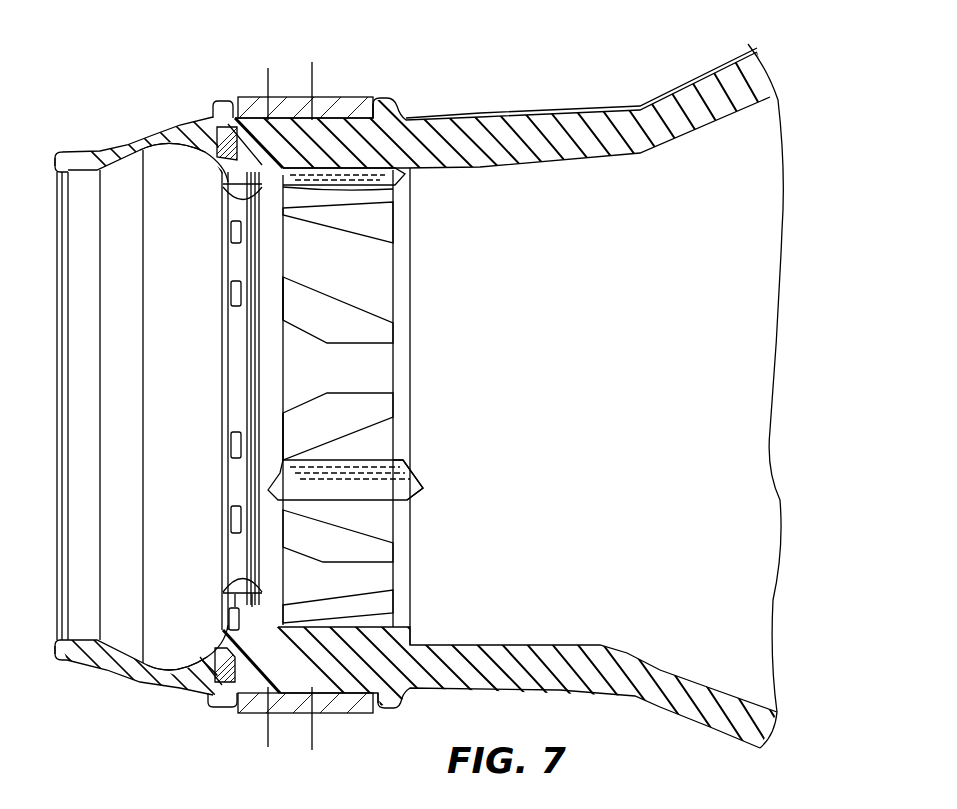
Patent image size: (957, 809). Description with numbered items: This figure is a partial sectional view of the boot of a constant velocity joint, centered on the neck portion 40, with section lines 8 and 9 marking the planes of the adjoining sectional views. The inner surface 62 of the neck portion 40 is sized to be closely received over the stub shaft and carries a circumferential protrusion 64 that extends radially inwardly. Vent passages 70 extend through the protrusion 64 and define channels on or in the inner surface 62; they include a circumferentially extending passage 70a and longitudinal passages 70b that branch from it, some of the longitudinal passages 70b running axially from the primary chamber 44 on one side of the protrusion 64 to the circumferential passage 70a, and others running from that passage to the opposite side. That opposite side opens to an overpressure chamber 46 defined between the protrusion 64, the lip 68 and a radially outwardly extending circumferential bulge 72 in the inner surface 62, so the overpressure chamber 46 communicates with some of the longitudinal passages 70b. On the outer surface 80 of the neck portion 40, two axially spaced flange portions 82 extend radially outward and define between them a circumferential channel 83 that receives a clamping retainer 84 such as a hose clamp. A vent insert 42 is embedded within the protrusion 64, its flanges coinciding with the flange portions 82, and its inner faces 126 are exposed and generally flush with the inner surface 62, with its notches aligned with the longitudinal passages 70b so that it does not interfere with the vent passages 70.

The neck portion 40 is at (453, 119).
The vent insert 42 is at (220, 460).
The primary chamber 44 is at (757, 127).
The overpressure chamber 46 is at (172, 163).
The inner surface 62 is at (524, 168).
The circumferential protrusion 64 is at (401, 355).
The lip 68 is at (54, 160).
The vent passages 70 is at (243, 195).
The circumferentially extending passage 70a is at (268, 392).
The longitudinal passages 70b is at (240, 192).
The circumferential bulge 72 is at (197, 153).
The outer surface 80 is at (533, 117).
The flange portions 82 is at (213, 104).
The circumferential channel 83 is at (377, 102).
The retainer 84 is at (293, 96).
The inner faces 126 is at (338, 312).
The section line 8- 8 is at (338, 77).
The section line 9- 9 is at (277, 77).